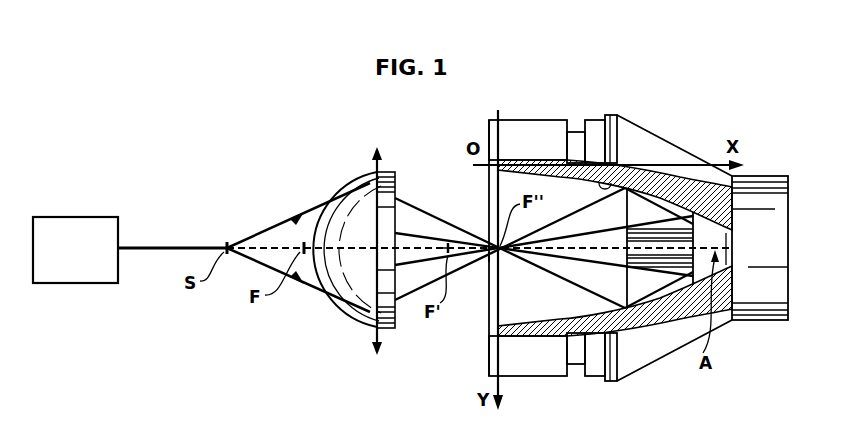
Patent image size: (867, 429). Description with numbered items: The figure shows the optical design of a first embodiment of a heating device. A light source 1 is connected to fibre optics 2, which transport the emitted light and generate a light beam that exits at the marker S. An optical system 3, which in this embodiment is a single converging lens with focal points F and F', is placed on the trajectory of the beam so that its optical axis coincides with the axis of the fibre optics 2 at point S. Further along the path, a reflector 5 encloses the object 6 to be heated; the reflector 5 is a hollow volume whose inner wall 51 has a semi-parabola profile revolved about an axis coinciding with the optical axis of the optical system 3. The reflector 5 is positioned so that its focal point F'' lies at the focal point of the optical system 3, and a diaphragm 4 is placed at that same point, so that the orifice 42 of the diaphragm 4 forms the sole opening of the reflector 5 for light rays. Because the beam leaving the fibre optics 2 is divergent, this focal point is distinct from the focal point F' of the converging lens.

The light source 1 is at (75, 250).
The fibre optics 2 is at (172, 246).
The optical system 3 is at (364, 190).
The diaphragm 4 is at (489, 198).
The orifice 42 is at (487, 257).
The reflector 5 is at (638, 229).
The inner wall 51 is at (608, 187).
The object 6 is at (660, 255).